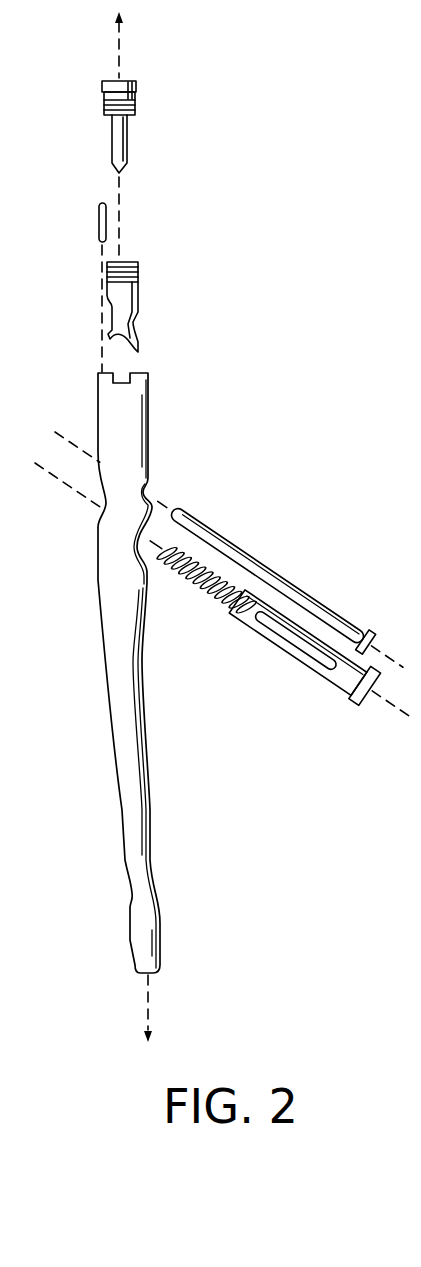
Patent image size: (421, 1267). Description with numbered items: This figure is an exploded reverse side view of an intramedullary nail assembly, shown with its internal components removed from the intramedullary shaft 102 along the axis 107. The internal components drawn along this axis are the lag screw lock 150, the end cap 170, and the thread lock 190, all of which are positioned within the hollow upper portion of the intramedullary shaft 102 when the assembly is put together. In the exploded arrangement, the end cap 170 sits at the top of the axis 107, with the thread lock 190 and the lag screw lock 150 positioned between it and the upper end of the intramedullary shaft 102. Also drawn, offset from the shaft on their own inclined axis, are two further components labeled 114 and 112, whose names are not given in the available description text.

The axis 107 is at (120, 58).
The end cap 170 is at (127, 132).
The thread lock 190 is at (99, 217).
The lag screw lock 150 is at (128, 297).
The intramedullary shaft 102 is at (135, 411).
The plunger rod 114 is at (280, 572).
The sleeve 112 is at (293, 650).